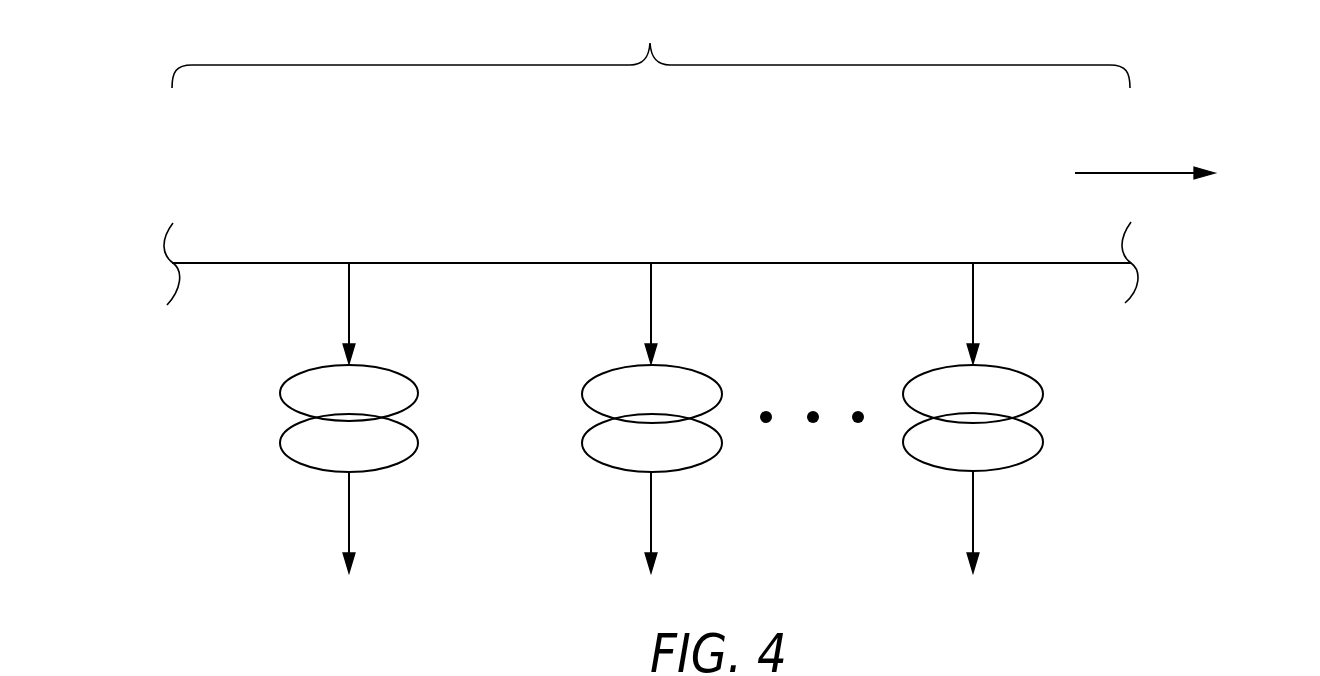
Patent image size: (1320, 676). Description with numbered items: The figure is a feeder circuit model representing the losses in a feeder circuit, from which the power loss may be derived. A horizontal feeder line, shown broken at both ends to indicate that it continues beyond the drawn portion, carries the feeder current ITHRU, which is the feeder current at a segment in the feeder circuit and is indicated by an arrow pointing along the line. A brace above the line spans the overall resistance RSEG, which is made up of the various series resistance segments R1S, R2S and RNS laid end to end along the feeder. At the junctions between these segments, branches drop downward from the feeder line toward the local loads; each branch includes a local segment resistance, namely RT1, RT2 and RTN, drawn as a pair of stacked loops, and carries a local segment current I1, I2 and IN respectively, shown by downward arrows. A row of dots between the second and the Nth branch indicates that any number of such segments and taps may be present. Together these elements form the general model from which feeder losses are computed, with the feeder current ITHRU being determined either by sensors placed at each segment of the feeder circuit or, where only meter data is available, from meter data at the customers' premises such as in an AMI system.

The resistance RSEG is at (651, 44).
The resistance segment R1S is at (260, 209).
The resistance segment R2S is at (500, 209).
The resistance segment RNS is at (813, 209).
The feeder current ITHRU is at (1197, 176).
The local segment resistance RT1 is at (349, 418).
The local segment resistance RT2 is at (652, 418).
The local segment resistance RTN is at (973, 418).
The local segment current I1 is at (367, 305).
The local segment current I2 is at (668, 305).
The local segment current IN is at (992, 305).